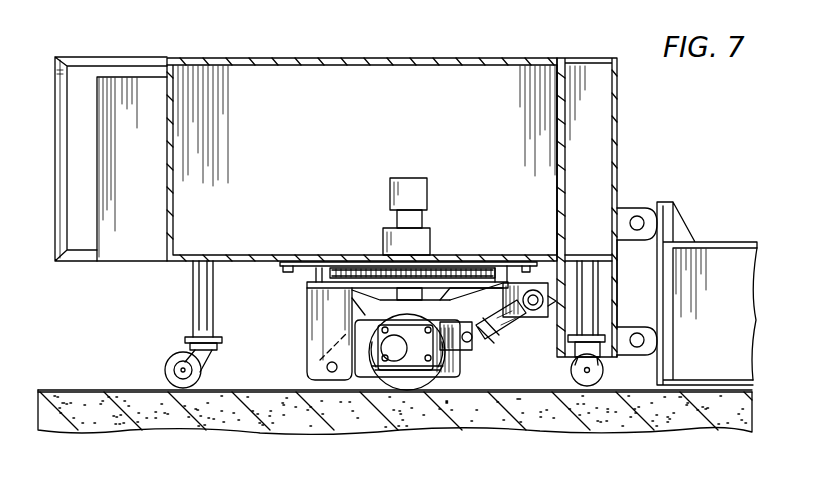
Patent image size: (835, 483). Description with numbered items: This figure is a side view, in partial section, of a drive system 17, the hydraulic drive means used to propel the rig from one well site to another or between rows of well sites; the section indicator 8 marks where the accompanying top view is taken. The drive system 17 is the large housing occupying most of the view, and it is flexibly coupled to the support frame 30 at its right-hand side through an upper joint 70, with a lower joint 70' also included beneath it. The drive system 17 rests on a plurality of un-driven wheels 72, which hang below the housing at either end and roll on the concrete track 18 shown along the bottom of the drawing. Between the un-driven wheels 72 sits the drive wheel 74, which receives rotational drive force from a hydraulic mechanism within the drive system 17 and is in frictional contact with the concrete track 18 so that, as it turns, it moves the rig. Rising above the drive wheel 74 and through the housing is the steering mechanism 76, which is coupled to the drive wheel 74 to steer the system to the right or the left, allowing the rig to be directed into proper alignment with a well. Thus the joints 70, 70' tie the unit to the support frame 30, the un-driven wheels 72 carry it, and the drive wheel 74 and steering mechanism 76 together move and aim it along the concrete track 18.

The section line 8- 8 is at (45, 73).
The drive system 17 is at (395, 77).
The concrete track 18 is at (98, 390).
The support frame 30 is at (718, 365).
The upper joint 70 is at (642, 194).
The lower joint 70' is at (637, 298).
The un-driven wheels 72 is at (193, 382).
The drive wheel 74 is at (407, 380).
The steering mechanism 76 is at (438, 240).